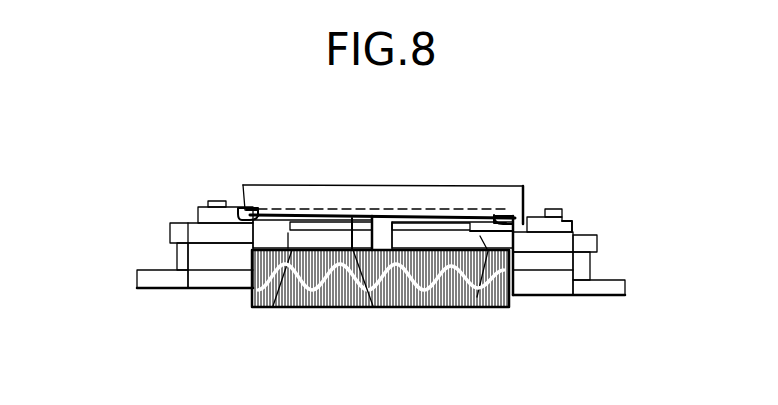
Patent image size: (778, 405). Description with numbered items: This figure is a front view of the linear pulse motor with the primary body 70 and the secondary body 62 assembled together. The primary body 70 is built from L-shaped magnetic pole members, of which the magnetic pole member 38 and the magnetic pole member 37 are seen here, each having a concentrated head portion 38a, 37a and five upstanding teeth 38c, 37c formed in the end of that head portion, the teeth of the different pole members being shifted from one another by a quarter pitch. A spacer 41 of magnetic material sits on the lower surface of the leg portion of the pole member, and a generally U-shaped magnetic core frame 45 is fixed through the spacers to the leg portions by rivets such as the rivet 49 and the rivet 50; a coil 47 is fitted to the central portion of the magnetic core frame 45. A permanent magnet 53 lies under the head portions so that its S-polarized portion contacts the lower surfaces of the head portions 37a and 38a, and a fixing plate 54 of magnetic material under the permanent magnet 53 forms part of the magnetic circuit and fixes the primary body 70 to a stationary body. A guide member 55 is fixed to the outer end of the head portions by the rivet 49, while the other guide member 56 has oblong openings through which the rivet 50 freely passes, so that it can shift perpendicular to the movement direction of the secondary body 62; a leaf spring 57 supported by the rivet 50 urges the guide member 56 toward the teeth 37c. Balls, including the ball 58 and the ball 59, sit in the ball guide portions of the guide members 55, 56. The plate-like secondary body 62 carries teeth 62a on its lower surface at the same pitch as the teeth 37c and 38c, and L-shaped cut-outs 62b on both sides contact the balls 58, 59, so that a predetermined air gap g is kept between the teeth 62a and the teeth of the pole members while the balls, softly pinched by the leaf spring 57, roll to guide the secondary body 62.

The primary body 70 is at (507, 129).
The secondary body 62 is at (397, 197).
The teeth 62a is at (370, 290).
The cut-outs 62b is at (267, 210).
The ball 59 is at (248, 207).
The ball 58 is at (513, 212).
The air gap g is at (370, 209).
The magnetic pole member 38 is at (197, 235).
The head portion 38a is at (279, 290).
The teeth 38c is at (329, 210).
The magnetic pole member 37 is at (567, 247).
The head portion 37a is at (475, 290).
The teeth 37c is at (431, 212).
The coil 47 is at (322, 298).
The guide member 55 is at (207, 212).
The rivet 49 is at (213, 200).
The magnetic core frame 45 is at (232, 285).
The permanent magnet 53 is at (183, 262).
The fixing plate 54 is at (150, 278).
The guide member 56 is at (527, 215).
The rivet 50 is at (552, 211).
The leaf spring 57 is at (573, 220).
The spacer 41 is at (560, 263).